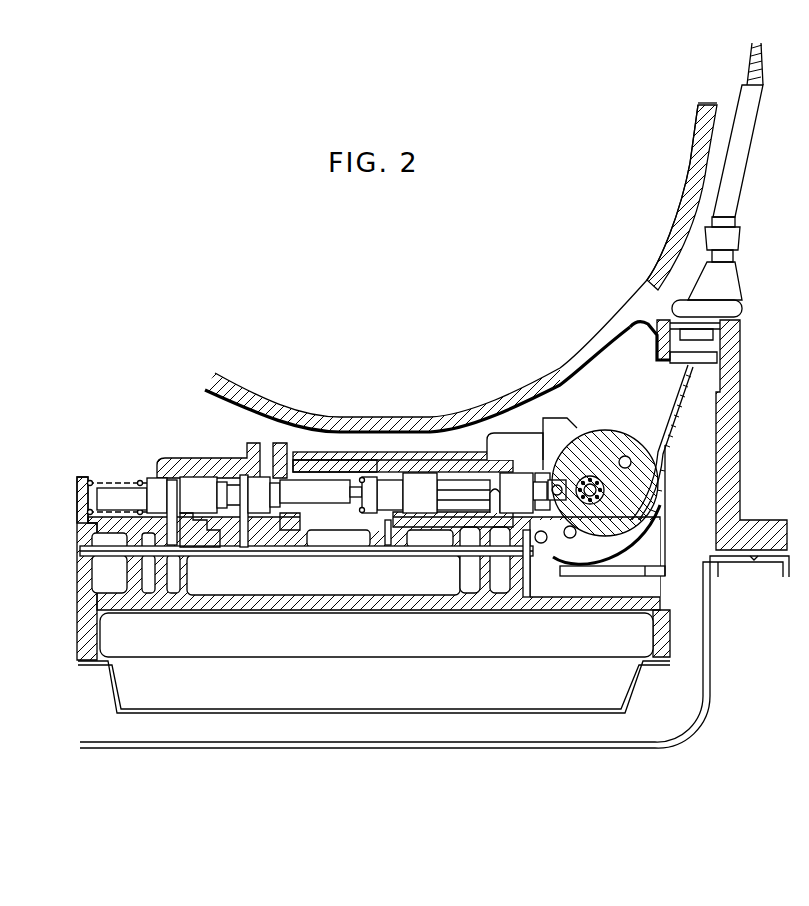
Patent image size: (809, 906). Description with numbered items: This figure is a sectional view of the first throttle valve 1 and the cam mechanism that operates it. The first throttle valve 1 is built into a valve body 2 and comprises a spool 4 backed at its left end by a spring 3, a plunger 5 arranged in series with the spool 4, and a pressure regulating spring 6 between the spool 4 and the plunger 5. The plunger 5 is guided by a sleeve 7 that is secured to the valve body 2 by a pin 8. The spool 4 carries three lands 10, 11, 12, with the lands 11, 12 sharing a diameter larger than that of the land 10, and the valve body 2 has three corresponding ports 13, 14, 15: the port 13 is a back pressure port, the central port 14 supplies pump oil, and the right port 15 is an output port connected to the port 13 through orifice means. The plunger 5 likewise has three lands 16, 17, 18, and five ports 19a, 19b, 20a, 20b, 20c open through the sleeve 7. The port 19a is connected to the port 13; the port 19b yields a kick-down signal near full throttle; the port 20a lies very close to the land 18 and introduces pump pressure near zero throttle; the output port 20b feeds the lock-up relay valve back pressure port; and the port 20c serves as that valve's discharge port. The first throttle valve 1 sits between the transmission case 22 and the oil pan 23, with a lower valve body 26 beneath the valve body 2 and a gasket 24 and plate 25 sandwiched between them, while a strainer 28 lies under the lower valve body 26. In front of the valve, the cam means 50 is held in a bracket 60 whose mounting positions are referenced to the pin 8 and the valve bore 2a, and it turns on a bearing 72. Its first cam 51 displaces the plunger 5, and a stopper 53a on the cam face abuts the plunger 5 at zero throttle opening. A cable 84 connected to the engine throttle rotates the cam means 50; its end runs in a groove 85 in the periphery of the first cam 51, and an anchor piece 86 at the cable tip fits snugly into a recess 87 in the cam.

The first throttle valve 1 is at (163, 395).
The valve body 2 is at (225, 455).
The valve bore 2a is at (455, 527).
The spring 3 is at (102, 477).
The spool 4 is at (165, 480).
The plunger 5 is at (487, 490).
The pressure regulating spring 6 is at (300, 470).
The sleeve 7 is at (390, 480).
The pin 8 is at (527, 556).
The land 10 is at (148, 490).
The land 11 is at (200, 480).
The land 12 is at (252, 478).
The port 13 is at (178, 543).
The central port 14 is at (212, 545).
The right port 15 is at (246, 545).
The land 16 is at (368, 460).
The land 17 is at (418, 480).
The land 18 is at (520, 455).
The port 19a is at (388, 545).
The port 19b is at (365, 477).
The port 20a is at (500, 465).
The output port 20b is at (470, 465).
The port 20c is at (450, 470).
The transmission case 22 is at (555, 378).
The oil pan 23 is at (716, 650).
The gasket 24 is at (82, 540).
The plate 25 is at (80, 553).
The lower valve body 26 is at (80, 612).
The strainer 28 is at (110, 705).
The cam means 50 is at (612, 418).
The first cam 51 is at (625, 435).
The stopper 53a is at (562, 478).
The bracket 60 is at (665, 578).
The bearing 72 is at (617, 500).
The cable 84 is at (715, 415).
The groove 85 is at (613, 565).
The anchor piece 86 is at (555, 555).
The recess 87 is at (541, 548).